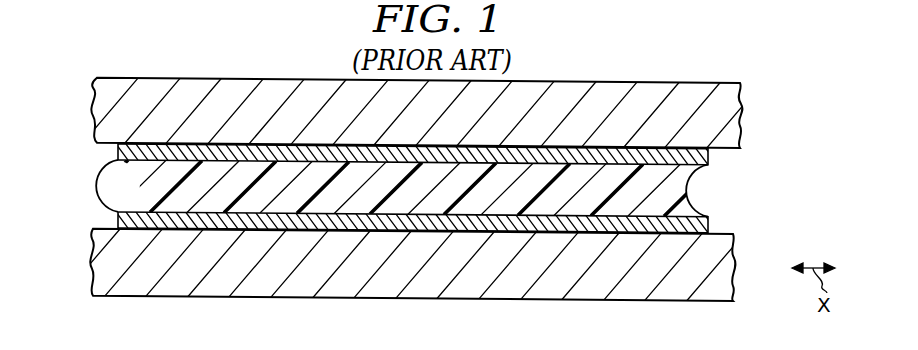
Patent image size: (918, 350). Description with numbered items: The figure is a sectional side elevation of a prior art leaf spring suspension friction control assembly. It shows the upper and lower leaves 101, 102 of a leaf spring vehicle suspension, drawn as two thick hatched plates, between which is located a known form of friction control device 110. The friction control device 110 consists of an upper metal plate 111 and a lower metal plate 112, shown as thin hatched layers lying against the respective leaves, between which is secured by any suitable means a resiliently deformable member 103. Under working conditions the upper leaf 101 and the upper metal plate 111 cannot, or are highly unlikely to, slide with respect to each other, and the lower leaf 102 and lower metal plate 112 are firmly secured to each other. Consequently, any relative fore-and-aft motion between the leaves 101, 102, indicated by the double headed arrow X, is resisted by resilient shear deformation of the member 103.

The upper leaf 101 is at (655, 78).
The lower leaf 102 is at (653, 301).
The resiliently deformable member 103 is at (432, 202).
The friction control device 110 is at (743, 181).
The upper metal plate 111 is at (119, 160).
The lower metal plate 112 is at (709, 221).